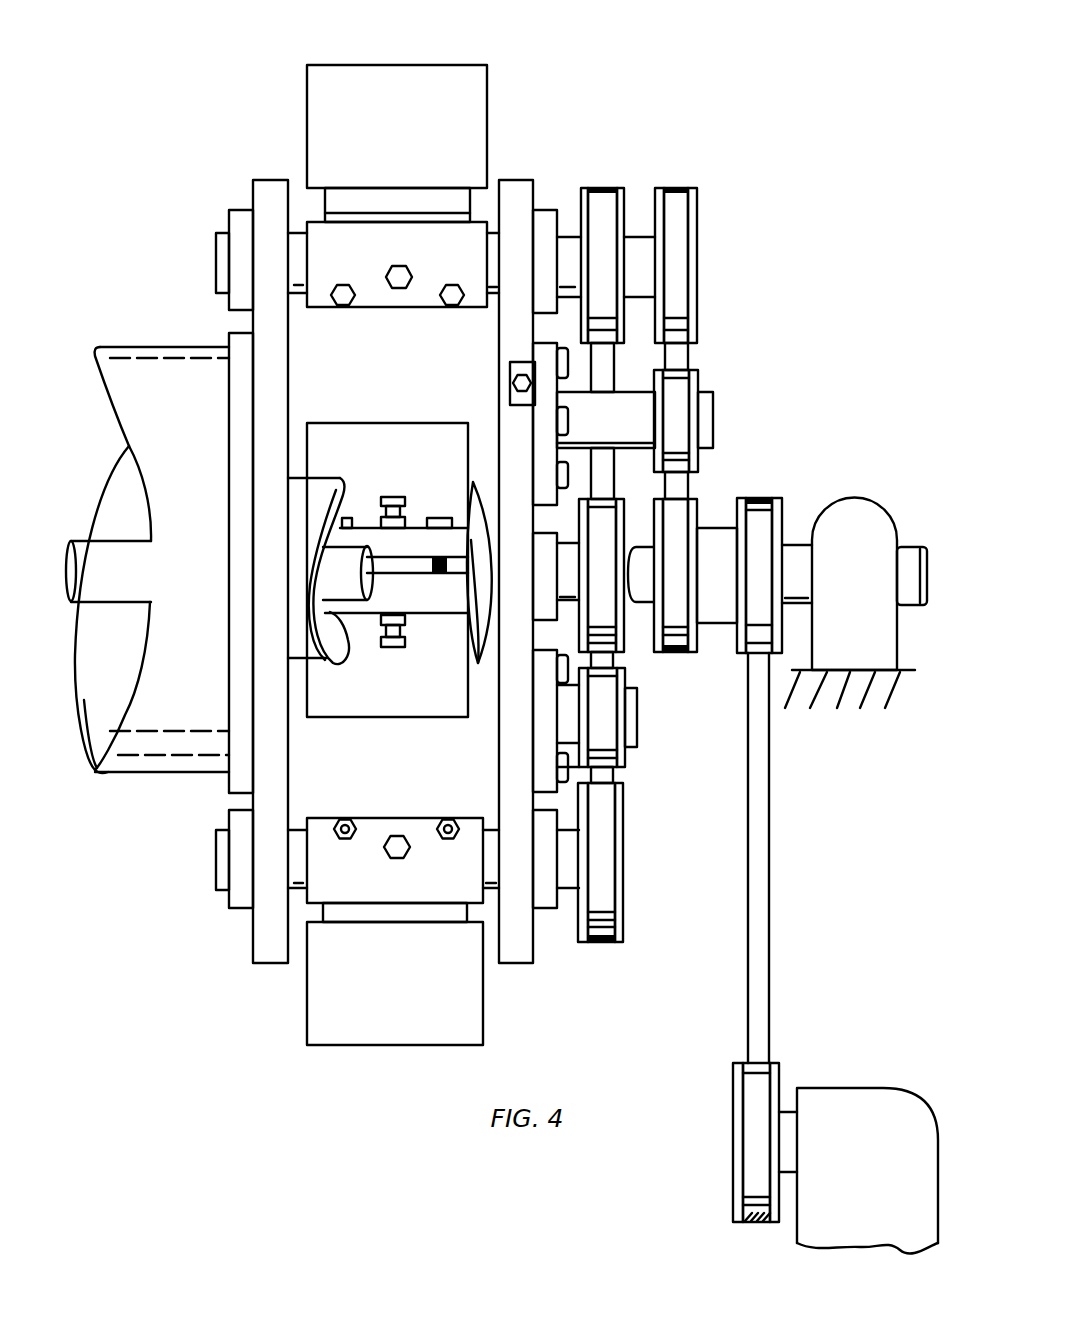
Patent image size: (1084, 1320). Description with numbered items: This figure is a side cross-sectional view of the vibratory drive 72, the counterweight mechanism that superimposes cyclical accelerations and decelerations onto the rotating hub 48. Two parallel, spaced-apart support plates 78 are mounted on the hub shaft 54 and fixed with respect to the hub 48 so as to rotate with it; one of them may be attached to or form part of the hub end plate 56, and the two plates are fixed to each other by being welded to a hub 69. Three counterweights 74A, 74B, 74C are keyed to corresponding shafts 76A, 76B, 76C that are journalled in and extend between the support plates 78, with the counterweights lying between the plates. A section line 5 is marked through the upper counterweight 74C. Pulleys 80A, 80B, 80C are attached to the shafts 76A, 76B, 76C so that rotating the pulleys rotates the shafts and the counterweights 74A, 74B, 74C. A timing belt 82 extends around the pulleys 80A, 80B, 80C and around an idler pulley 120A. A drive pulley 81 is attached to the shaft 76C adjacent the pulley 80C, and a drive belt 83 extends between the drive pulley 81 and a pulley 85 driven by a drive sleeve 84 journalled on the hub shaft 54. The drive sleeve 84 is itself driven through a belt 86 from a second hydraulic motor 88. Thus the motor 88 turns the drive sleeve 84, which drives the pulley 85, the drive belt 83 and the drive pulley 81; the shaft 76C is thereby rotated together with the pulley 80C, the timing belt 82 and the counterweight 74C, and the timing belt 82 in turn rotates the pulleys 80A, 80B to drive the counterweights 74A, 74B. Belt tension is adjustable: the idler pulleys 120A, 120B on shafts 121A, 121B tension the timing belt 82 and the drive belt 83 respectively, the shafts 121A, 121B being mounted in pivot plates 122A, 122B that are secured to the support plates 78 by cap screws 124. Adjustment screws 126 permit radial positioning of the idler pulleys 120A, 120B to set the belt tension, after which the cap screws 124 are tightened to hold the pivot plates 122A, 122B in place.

The section line 5- 5 is at (399, 30).
The hub 48 is at (175, 445).
The hub shaft 54 is at (496, 586).
The hub end plate 56 is at (212, 563).
The hub 69 is at (299, 520).
The vibratory drive 72 is at (846, 313).
The counterweight 74A is at (382, 470).
The counterweight 74B is at (449, 982).
The counterweight 74C is at (475, 92).
The shaft 76A is at (537, 506).
The shaft 76B is at (220, 863).
The shaft 76C is at (215, 258).
The support plates 78 is at (396, 542).
The pulley 80A is at (620, 658).
The pulley 80B is at (641, 862).
The pulley 80C is at (630, 228).
The drive pulley 81 is at (697, 247).
The timing belt 82 is at (622, 968).
The drive belt 83 is at (673, 186).
The drive sleeve 84 is at (727, 545).
The pulley 85 is at (673, 650).
The belt 86 is at (783, 860).
The second hydraulic motor 88 is at (858, 1144).
The idler pulley 120A is at (605, 733).
The idler pulley 120B is at (694, 461).
The shaft 121A is at (628, 717).
The shaft 121B is at (713, 412).
The pivot plate 122A is at (486, 721).
The pivot plate 122B is at (482, 424).
The cap screws 124 is at (515, 468).
The adjustment screws 126 is at (513, 380).